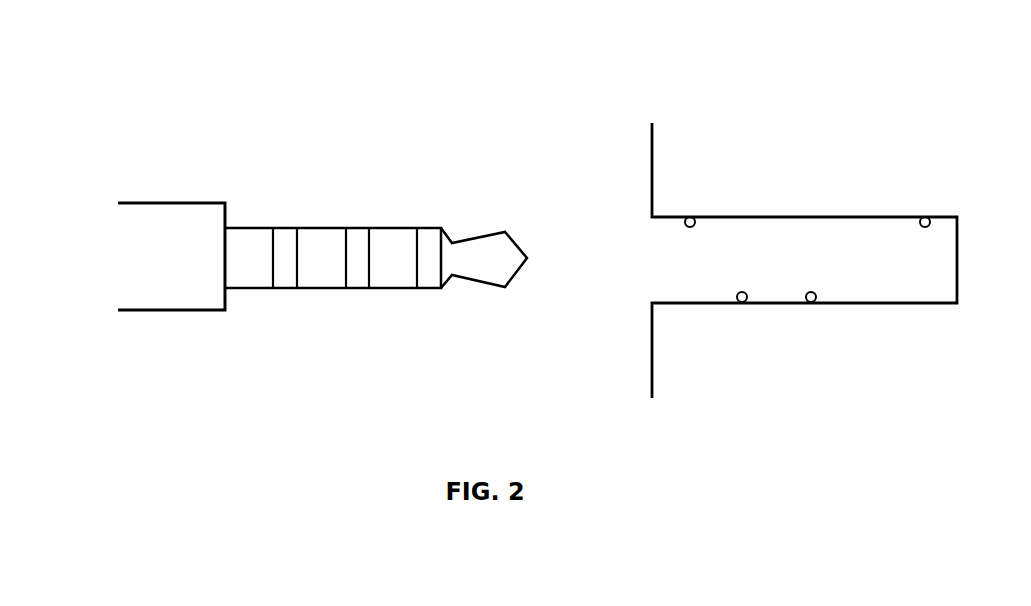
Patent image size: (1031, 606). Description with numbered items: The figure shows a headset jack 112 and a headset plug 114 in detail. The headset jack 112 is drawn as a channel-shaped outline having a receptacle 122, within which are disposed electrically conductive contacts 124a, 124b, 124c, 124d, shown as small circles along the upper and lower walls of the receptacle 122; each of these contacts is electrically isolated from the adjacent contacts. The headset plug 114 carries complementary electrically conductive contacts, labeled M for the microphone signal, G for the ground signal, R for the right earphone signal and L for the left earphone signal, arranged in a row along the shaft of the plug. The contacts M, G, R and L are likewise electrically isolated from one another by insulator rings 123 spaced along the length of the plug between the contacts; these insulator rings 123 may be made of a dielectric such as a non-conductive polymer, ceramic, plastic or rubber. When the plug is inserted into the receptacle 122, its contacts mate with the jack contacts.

The headset plug 114 is at (163, 203).
The insulator rings 123 is at (285, 228).
The headset jack 112 is at (793, 217).
The electrically conductive contact 124a is at (690, 217).
The electrically conductive contact 124b is at (742, 302).
The electrically conductive contact 124c is at (811, 302).
The electrically conductive contact 124d is at (925, 217).
The receptacle 122 is at (918, 273).